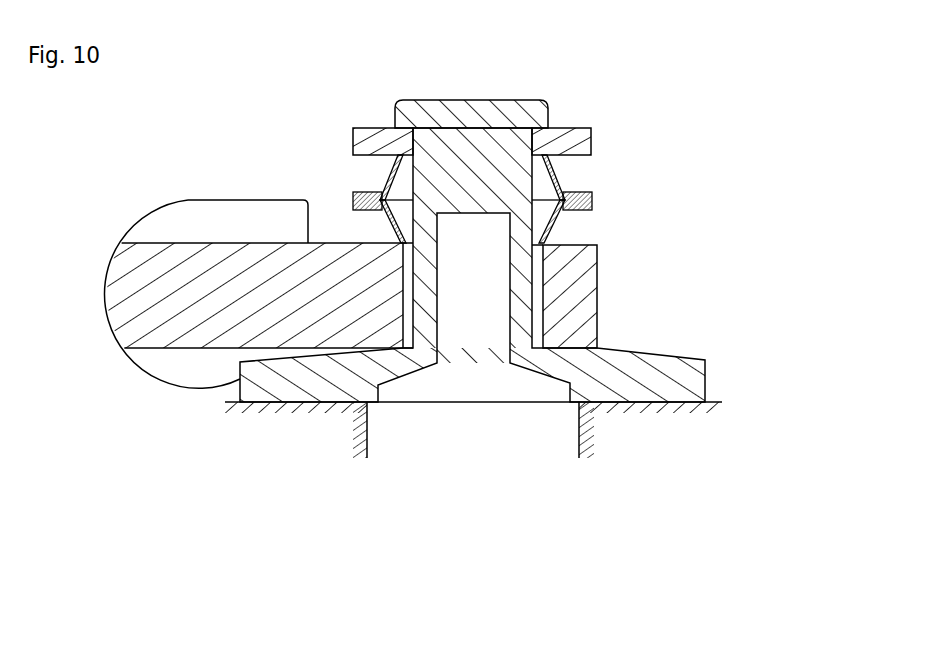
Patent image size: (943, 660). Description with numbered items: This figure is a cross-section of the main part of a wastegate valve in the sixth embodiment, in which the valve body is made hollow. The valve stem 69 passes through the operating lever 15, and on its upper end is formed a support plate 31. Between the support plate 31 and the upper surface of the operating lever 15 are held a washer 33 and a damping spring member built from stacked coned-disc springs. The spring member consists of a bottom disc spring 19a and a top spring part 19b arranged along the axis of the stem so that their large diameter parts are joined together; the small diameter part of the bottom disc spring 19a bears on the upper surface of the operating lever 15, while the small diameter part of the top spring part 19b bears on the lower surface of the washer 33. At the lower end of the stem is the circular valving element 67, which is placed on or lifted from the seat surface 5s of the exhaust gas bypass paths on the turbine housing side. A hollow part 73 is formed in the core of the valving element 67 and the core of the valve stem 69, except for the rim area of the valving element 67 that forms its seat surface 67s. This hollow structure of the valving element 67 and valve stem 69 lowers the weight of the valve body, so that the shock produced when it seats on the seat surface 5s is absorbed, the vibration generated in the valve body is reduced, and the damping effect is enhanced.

The support plate 31 is at (548, 106).
The washer 33 is at (591, 138).
The top spring part 19b is at (562, 172).
The bottom disc spring 19a is at (545, 232).
The valve stem 69 is at (518, 293).
The valving element 67 is at (708, 362).
The seat surface 67s is at (670, 405).
The seat surface 5s is at (622, 402).
The hollow part 73 is at (490, 387).
The operating lever 15 is at (185, 320).